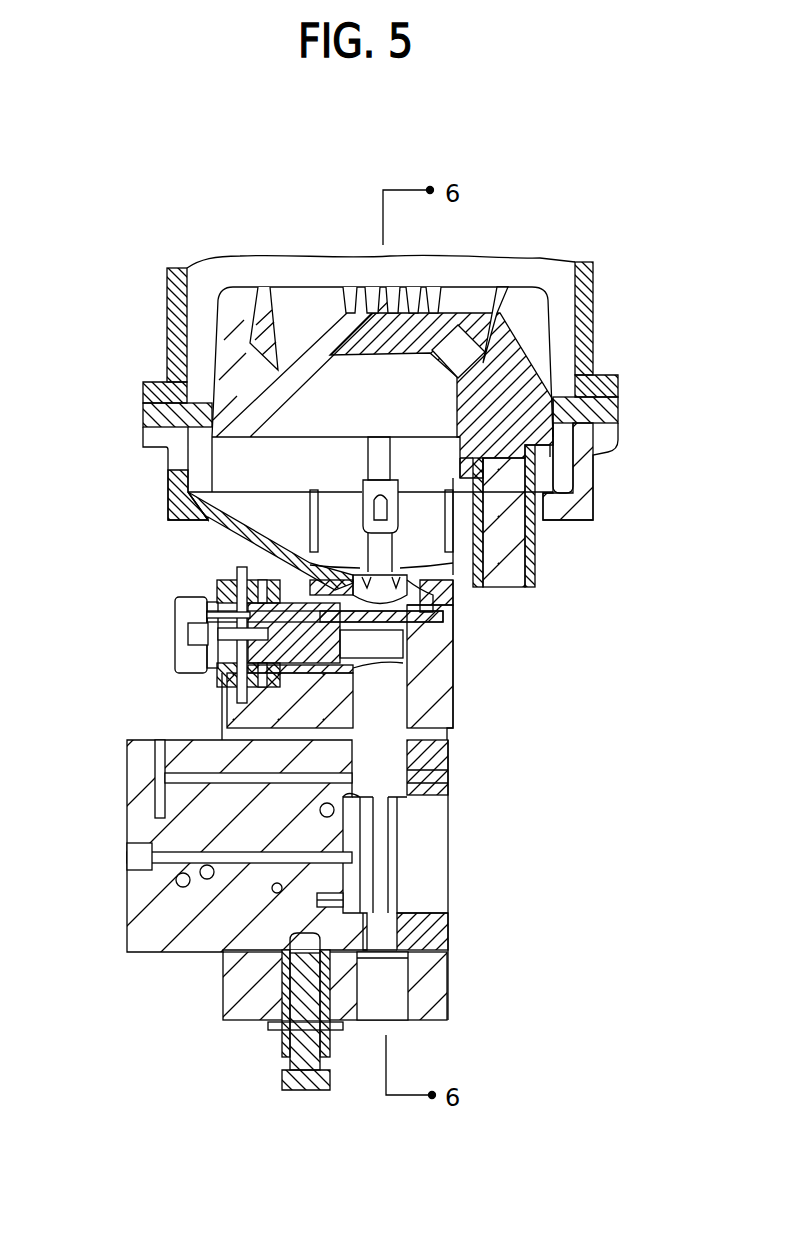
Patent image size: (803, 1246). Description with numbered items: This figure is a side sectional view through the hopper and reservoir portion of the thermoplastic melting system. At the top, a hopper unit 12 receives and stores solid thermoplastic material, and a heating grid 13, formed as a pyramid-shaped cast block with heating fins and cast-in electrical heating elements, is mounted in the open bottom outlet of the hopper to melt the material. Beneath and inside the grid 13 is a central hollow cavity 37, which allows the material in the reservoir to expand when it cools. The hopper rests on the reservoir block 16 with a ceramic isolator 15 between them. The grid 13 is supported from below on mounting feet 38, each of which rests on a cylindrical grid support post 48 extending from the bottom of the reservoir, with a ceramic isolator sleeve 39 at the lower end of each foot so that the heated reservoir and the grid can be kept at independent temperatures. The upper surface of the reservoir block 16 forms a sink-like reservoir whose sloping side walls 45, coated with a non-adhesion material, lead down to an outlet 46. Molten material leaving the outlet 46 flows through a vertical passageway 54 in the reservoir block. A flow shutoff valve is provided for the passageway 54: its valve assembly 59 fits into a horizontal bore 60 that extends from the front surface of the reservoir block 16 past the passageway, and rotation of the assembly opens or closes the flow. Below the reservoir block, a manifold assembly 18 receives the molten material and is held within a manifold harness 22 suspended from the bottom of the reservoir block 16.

The hopper unit 12 is at (588, 302).
The heating grid 13 is at (312, 330).
The ceramic isolator 15 is at (143, 408).
The reservoir block 16 is at (595, 468).
The manifold assembly 18 is at (163, 955).
The manifold harness 22 is at (448, 982).
The central hollow cavity 37 is at (338, 368).
The mounting foot 38 is at (512, 557).
The ceramic isolator sleeve 39 is at (536, 543).
The sloping side wall 45 is at (215, 512).
The outlet 46 is at (443, 617).
The grid support post 48 is at (478, 592).
The passageway 54 is at (397, 692).
The valve assembly 59 is at (173, 632).
The bore 60 is at (258, 585).